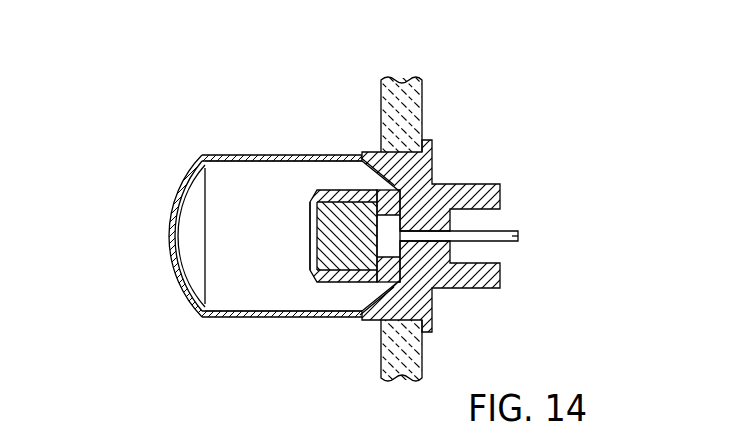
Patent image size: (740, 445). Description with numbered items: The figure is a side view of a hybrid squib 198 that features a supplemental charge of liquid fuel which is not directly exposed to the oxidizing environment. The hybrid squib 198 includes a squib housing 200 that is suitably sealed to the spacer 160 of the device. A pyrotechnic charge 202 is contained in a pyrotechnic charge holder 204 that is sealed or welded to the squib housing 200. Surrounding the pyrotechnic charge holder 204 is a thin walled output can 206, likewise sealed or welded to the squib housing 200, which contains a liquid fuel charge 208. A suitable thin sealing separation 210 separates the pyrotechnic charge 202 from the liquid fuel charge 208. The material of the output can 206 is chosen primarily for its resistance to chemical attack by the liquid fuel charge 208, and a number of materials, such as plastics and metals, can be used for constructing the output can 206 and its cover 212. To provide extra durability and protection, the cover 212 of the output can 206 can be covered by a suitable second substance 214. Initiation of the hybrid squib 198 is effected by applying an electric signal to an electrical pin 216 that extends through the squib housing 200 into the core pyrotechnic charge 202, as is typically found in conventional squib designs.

The spacer 160 is at (402, 92).
The hybrid squib 198 is at (440, 98).
The squib housing 200 is at (453, 184).
The pyrotechnic charge 202 is at (336, 262).
The pyrotechnic charge holder 204 is at (310, 200).
The output can 206 is at (185, 251).
The liquid fuel charge 208 is at (233, 290).
The sealing separation 210 is at (308, 243).
The cover 212 is at (220, 236).
The second substance 214 is at (177, 194).
The electrical pin 216 is at (512, 242).